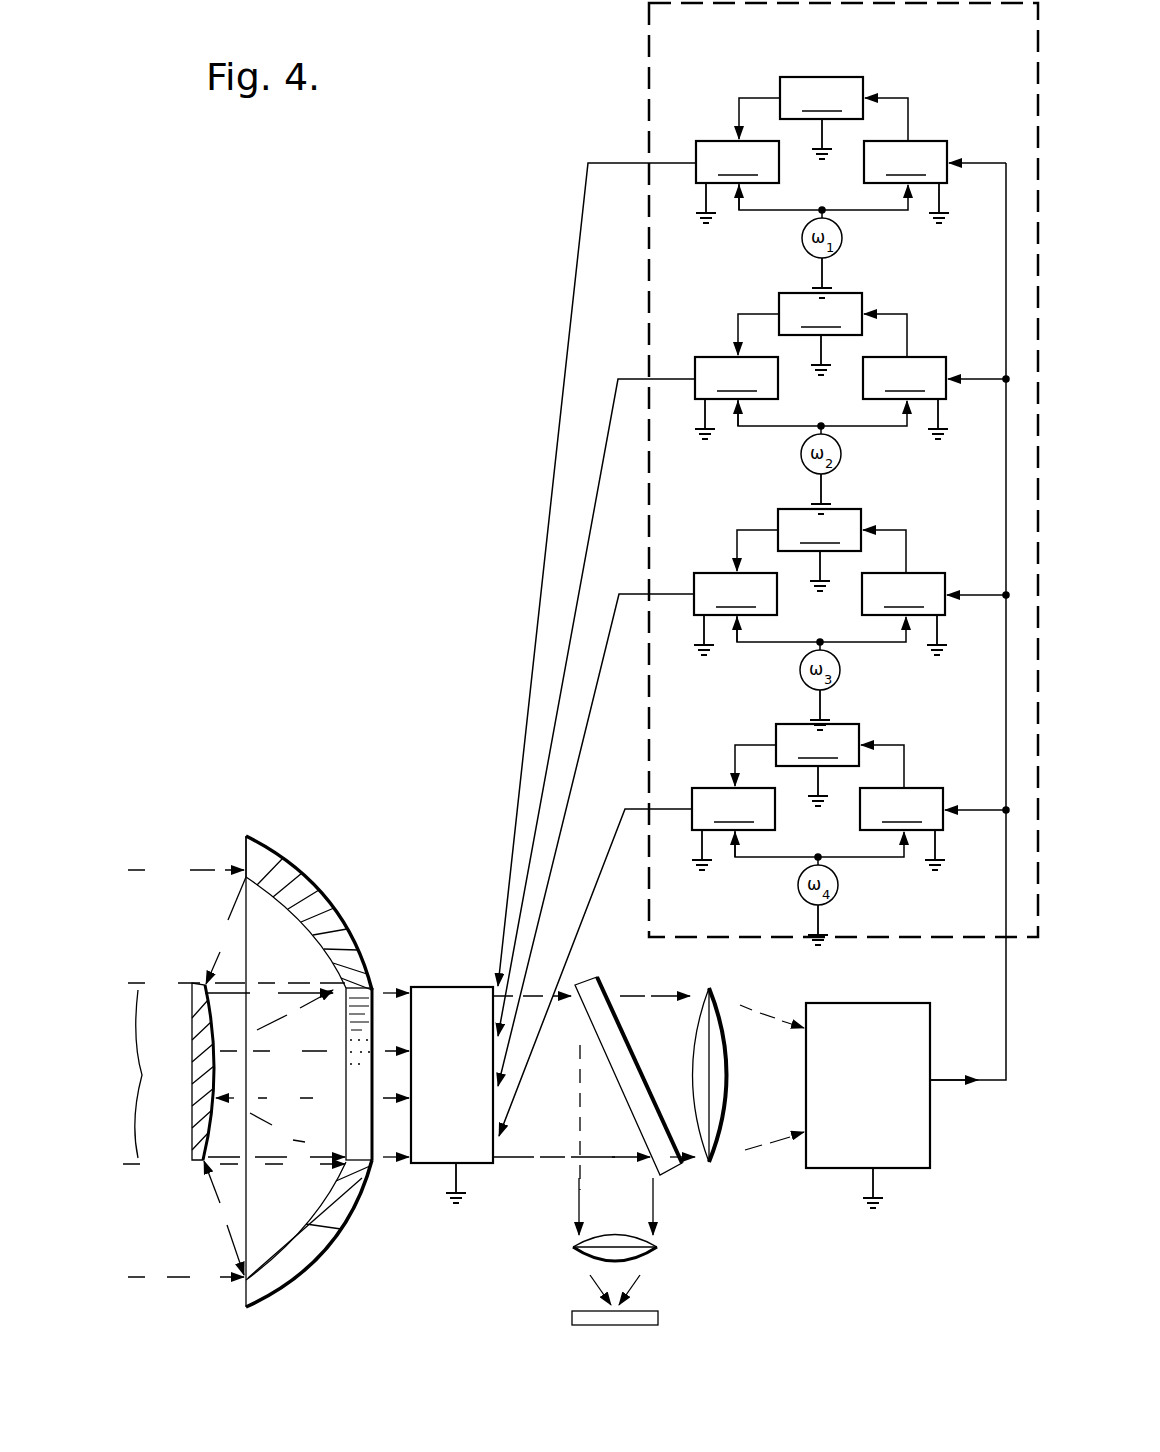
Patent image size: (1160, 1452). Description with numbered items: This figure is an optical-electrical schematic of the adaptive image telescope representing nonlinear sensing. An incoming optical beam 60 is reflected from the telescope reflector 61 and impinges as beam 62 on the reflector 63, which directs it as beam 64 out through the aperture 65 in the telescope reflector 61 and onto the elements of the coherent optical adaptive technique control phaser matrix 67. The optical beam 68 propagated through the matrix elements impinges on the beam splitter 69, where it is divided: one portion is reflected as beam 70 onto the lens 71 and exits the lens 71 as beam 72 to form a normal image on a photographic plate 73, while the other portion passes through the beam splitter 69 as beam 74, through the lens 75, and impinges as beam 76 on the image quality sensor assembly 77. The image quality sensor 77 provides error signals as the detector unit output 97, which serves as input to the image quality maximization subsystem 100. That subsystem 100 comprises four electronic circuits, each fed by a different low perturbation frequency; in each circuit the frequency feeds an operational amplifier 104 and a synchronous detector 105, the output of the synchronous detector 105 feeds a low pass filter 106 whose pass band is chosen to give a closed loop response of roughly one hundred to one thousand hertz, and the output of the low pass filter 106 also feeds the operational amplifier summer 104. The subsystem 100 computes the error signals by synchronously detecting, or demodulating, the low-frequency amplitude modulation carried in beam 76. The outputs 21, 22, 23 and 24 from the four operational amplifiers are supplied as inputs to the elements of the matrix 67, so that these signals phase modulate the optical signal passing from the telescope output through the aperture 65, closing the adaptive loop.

The output 21 is at (571, 332).
The output 22 is at (589, 546).
The output 23 is at (585, 738).
The output 24 is at (568, 952).
The optical beam 60 is at (160, 868).
The telescope reflector 61 is at (333, 925).
The beam 62 is at (230, 910).
The reflector 63 is at (203, 985).
The beam 64 is at (298, 990).
The aperture 65 is at (349, 1108).
The COAT control phaser matrix 67 is at (482, 1163).
The optical beam 68 is at (557, 1000).
The beam splitter 69 is at (606, 1000).
The beam 70 is at (650, 1220).
The lens 71 is at (573, 1247).
The beam 72 is at (625, 1300).
The photographic plate 73 is at (578, 1316).
The beam 74 is at (690, 992).
The lens 75 is at (720, 1160).
The beam 76 is at (767, 1005).
The image quality sensor assembly 77 is at (930, 1168).
The detector unit output 97 is at (1006, 680).
The image quality maximization subsystem 100 is at (649, 55).
The operational amplifier 104 is at (735, 485).
The synchronous detector 105 is at (903, 485).
The low pass filter 106 is at (819, 421).